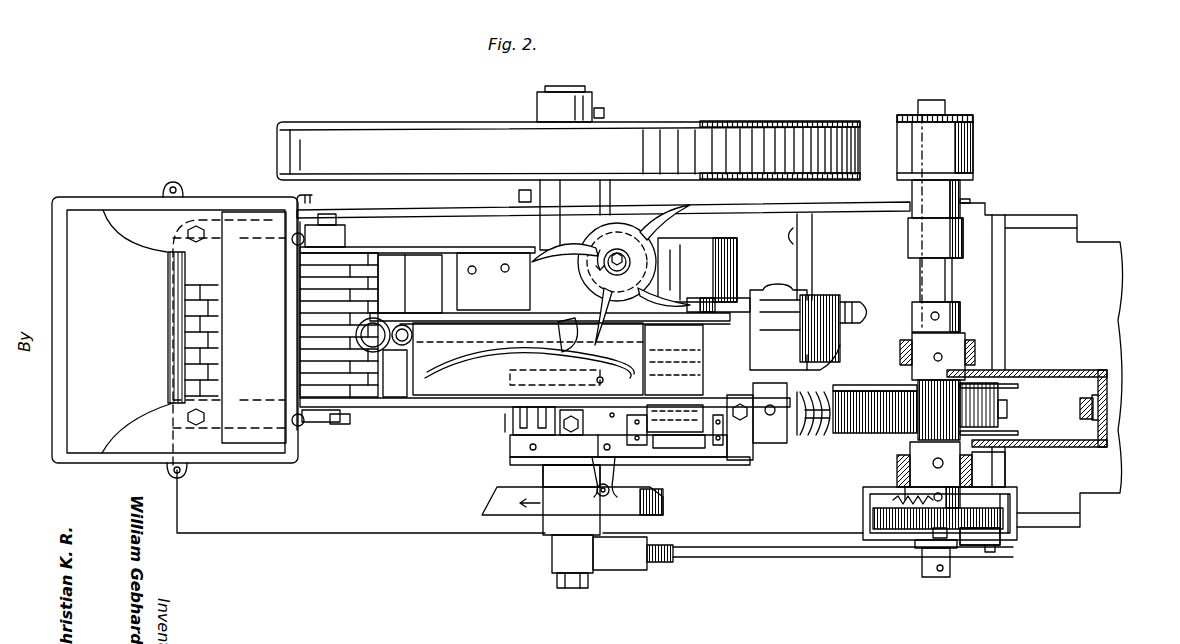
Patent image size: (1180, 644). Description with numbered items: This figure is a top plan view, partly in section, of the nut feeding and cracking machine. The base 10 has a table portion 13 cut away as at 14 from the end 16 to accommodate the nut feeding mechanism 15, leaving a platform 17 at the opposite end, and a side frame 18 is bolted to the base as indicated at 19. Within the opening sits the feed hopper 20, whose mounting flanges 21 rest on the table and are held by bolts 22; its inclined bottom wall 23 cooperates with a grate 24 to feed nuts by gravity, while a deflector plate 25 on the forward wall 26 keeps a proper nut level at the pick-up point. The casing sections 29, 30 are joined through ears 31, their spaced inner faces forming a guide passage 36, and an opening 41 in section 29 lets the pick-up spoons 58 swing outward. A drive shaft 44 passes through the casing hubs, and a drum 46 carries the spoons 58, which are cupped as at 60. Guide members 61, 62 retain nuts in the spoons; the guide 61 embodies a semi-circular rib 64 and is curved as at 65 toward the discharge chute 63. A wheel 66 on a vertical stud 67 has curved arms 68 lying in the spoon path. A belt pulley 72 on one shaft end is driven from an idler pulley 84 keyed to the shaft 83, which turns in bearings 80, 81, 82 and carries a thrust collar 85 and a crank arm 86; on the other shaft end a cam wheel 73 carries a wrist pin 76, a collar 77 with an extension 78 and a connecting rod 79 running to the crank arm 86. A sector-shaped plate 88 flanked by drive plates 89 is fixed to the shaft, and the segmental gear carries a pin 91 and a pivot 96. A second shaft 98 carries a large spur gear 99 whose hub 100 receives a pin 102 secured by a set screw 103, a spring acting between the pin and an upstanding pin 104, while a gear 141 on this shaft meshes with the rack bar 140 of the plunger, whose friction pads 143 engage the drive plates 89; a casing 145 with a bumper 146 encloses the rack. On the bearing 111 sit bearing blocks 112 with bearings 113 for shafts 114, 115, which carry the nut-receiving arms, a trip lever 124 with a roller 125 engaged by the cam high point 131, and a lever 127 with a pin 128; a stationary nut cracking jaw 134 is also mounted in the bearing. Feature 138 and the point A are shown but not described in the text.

The base 10 is at (287, 540).
The table portion 13 is at (420, 498).
The cut away portion 14 is at (796, 236).
The nut feeding mechanism 15 is at (491, 156).
The end of the base 16 is at (166, 487).
The platform 17 is at (872, 228).
The side frame 18 is at (782, 207).
The bolts 19 is at (975, 200).
The feed hopper 20 is at (128, 197).
The mounting flanges 21 is at (318, 423).
The bolts 22 is at (270, 195).
The inclined bottom wall 23 is at (85, 284).
The grate 24 is at (202, 367).
The deflector plate 25 is at (238, 283).
The forward wall 26 is at (290, 290).
The casing section 29 is at (845, 347).
The casing section 30 is at (810, 290).
The ears 31 is at (862, 317).
The guide passage 36 is at (425, 303).
The opening 41 is at (395, 373).
The drive shaft 44 is at (580, 88).
The drum 46 is at (470, 325).
The pick-up spoons 58 is at (545, 322).
The cupped portion 60 is at (383, 318).
The guide member 61 is at (492, 360).
The guide member 62 is at (485, 255).
The discharge chute 63 is at (770, 413).
The semi-circular rib 64 is at (535, 356).
The curved portion 65 is at (595, 365).
The wheel 66 is at (637, 242).
The vertical stud 67 is at (622, 262).
The curved arms 68 is at (590, 305).
The belt pulley 72 is at (690, 120).
The cam wheel 73 is at (498, 512).
The wrist pin 76 is at (575, 585).
The collar 77 is at (545, 563).
The extension 78 is at (621, 572).
The connecting rod 79 is at (722, 557).
The bearing 80 is at (975, 470).
The bearing 81 is at (965, 335).
The bearing 82 is at (965, 240).
The shaft 83 is at (950, 275).
The idler pulley 84 is at (968, 143).
The thrust collar 85 is at (965, 315).
The crank arm 86 is at (935, 580).
The sector-shaped plate 88 is at (1008, 410).
The drive plates 89 is at (1005, 372).
The pin 91 is at (1000, 540).
The pivot 96 is at (995, 550).
The second shaft 98 is at (900, 485).
The spur gear 99 is at (875, 520).
The hub 100 is at (1007, 485).
The pin 102 is at (895, 492).
The set screw 103 is at (935, 535).
The upstanding pin 104 is at (945, 484).
The bearing 111 is at (547, 475).
The bearing blocks 112 is at (520, 446).
The bearings 113 is at (755, 490).
The shaft 114 is at (703, 470).
The shaft 115 is at (690, 385).
The trip lever 124 is at (622, 476).
The roller 125 is at (597, 497).
The lever 127 is at (513, 420).
The pin 128 is at (513, 428).
The high point 131 is at (497, 500).
The stationary nut cracking jaw 134 is at (641, 427).
The block 138 is at (660, 405).
The rack bar 140 is at (985, 405).
The gear 141 is at (935, 415).
The friction pads 143 is at (858, 390).
The casing 145 is at (1085, 370).
The bumper 146 is at (1097, 404).
The bracket A is at (740, 300).